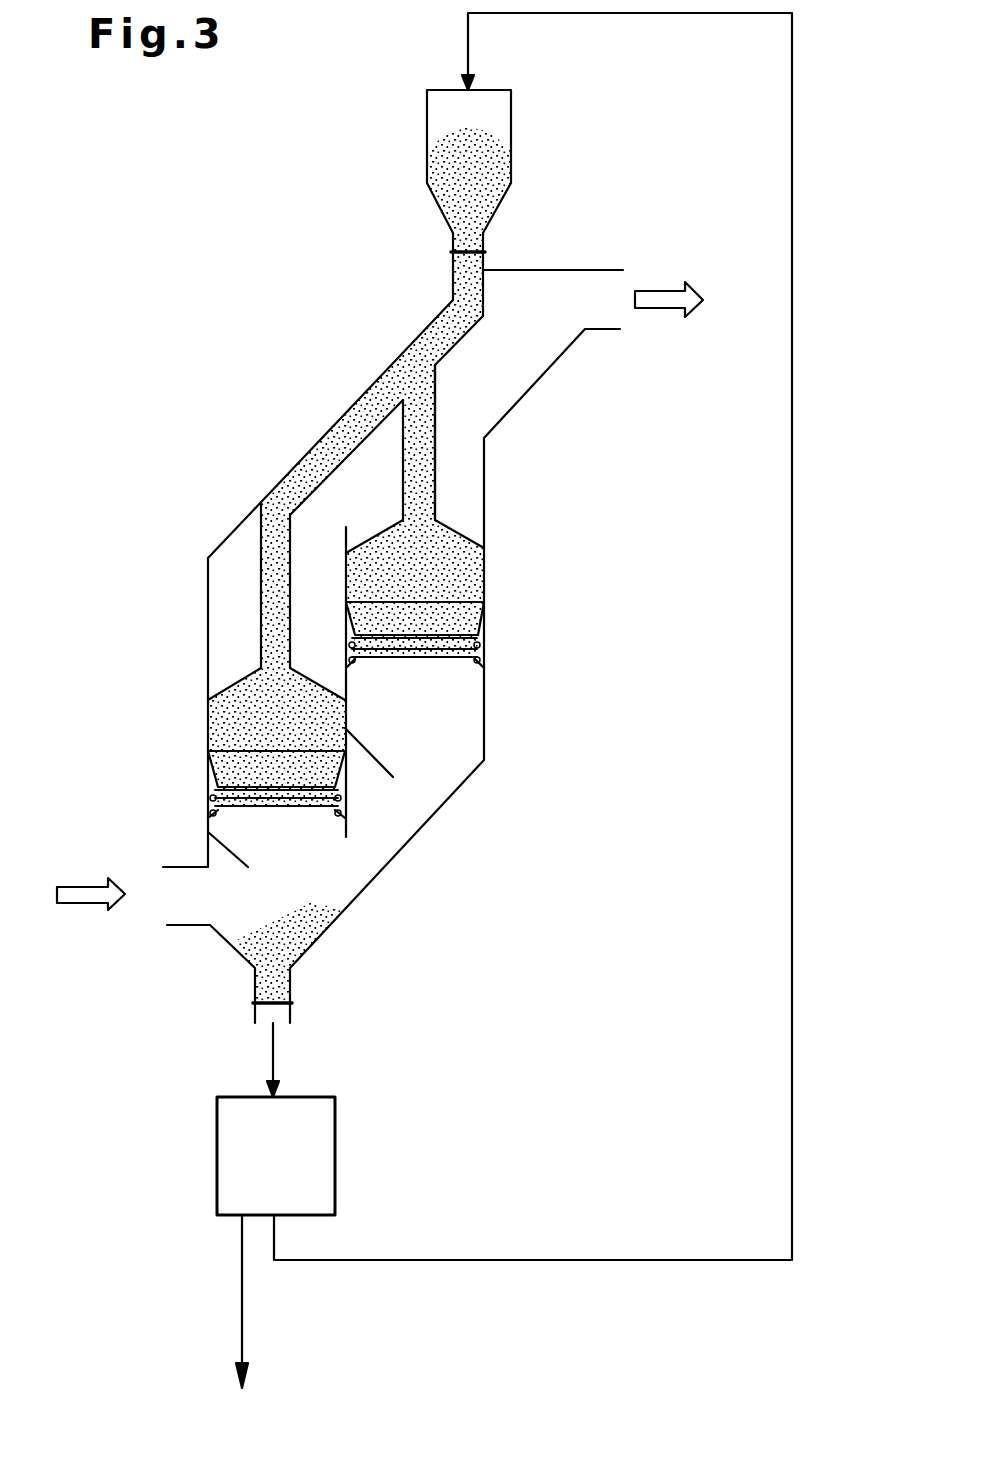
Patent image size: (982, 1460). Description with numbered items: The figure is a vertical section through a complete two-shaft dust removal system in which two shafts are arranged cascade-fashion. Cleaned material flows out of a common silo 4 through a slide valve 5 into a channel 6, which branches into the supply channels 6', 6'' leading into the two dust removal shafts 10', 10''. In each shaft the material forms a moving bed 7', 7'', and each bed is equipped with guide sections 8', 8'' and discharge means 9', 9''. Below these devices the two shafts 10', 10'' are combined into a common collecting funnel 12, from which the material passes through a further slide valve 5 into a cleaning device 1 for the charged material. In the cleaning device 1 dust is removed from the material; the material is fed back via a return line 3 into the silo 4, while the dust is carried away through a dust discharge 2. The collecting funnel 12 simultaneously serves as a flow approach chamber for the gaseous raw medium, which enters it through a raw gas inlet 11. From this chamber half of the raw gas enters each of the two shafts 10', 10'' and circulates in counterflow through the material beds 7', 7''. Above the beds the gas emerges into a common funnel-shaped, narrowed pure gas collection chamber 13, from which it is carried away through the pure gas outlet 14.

The cleaning device 1 is at (248, 1148).
The dust discharge 2 is at (245, 1288).
The return line 3 is at (792, 1050).
The silo 4 is at (447, 115).
The slide valve 5 is at (452, 247).
The channel 6 is at (345, 405).
The supply channel 6' is at (323, 527).
The supply channel 6'' is at (492, 442).
The moving bed 7' is at (232, 709).
The moving bed 7'' is at (469, 678).
The guide section 8' is at (226, 763).
The guide section 8'' is at (465, 613).
The discharge means 9' is at (229, 815).
The discharge means 9'' is at (451, 670).
The dust removal shaft 10' is at (181, 790).
The dust removal shaft 10'' is at (457, 676).
The raw gas inlet 11 is at (193, 893).
The collecting funnel 12 is at (317, 860).
The pure gas collection chamber 13 is at (452, 392).
The pure gas outlet 14 is at (593, 295).